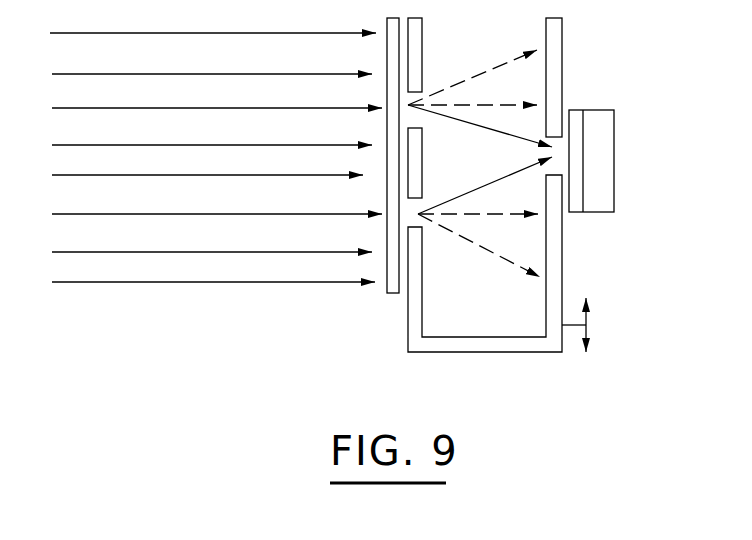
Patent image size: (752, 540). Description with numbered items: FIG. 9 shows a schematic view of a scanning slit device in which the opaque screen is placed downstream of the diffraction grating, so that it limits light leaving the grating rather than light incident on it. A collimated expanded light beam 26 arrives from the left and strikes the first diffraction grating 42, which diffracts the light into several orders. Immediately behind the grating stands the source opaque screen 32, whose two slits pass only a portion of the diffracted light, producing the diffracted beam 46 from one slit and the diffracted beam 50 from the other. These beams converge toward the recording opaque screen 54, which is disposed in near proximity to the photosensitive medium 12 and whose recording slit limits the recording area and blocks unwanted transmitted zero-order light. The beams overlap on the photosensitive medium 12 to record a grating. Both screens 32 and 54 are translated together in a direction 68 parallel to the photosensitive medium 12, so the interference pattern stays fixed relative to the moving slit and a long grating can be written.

The expanded light beam 26 is at (178, 141).
The first diffraction grating 42 is at (388, 294).
The source opaque screen 32 is at (418, 308).
The recording opaque screen 54 is at (562, 246).
The diffracted beam 46 is at (477, 129).
The diffracted beam 50 is at (502, 173).
The photosensitive medium 12 is at (583, 110).
The direction 68 is at (590, 338).